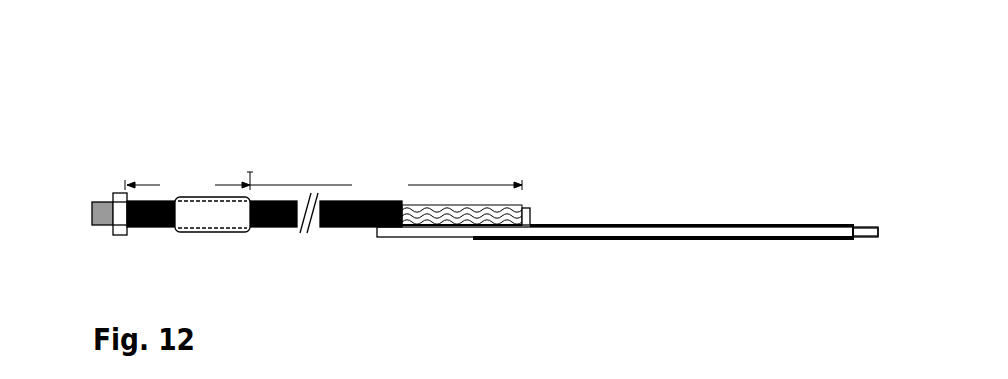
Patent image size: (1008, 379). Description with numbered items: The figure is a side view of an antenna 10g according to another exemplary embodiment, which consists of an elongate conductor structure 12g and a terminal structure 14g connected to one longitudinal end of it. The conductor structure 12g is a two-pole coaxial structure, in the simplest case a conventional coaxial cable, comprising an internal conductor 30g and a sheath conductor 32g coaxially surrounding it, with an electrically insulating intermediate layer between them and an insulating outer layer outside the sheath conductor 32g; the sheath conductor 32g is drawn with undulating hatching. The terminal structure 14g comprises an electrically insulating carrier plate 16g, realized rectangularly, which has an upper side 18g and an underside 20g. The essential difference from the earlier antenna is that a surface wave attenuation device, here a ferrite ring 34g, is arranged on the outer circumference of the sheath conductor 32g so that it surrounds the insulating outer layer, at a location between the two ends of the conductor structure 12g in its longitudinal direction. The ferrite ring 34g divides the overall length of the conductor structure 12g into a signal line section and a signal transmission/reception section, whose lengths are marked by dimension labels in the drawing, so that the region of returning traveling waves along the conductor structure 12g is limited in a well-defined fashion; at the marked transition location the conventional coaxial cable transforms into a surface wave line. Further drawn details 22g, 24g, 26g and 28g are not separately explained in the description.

The antenna 10g is at (334, 100).
The conductor structure 12g is at (152, 250).
The terminal structure 14g is at (566, 137).
The carrier plate 16g is at (412, 232).
The upper side 18g is at (672, 204).
The underside 20g is at (685, 257).
The strand 22g is at (495, 223).
The upper layer 24g is at (760, 223).
The lower sleeve wall 26g is at (778, 240).
The tip 28g is at (853, 225).
The internal conductor 30g is at (532, 220).
The sheath conductor 32g is at (423, 205).
The ferrite ring 34g is at (223, 248).